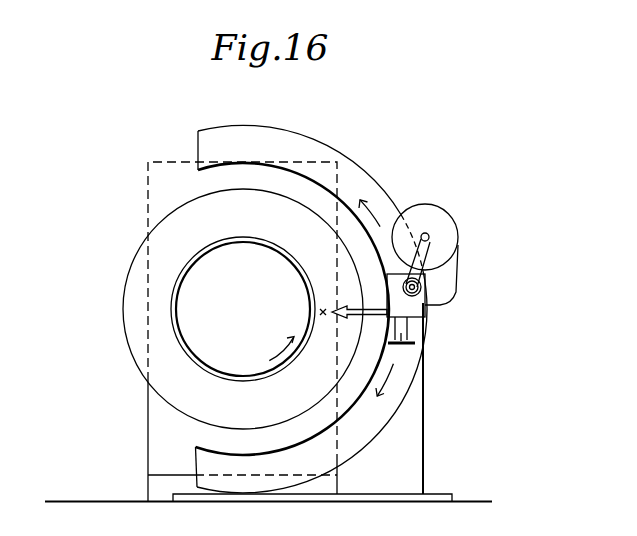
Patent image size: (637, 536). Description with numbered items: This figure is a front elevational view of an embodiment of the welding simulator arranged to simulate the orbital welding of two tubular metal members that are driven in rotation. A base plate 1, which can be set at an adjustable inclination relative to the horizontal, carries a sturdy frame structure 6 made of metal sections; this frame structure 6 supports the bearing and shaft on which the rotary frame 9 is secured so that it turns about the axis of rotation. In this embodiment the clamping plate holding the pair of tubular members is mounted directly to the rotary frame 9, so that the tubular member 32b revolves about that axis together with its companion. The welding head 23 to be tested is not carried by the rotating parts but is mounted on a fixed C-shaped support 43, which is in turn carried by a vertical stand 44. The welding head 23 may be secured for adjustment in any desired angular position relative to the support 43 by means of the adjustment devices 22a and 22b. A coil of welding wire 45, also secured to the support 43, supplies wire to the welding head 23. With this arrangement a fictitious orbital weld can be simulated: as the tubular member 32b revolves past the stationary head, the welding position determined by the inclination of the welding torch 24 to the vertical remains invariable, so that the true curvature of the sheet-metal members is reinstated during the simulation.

The base plate 1 is at (145, 485).
The frame structure 6 is at (158, 185).
The rotary frame 9 is at (141, 357).
The tubular member 32b is at (203, 247).
The welding torch 24 is at (368, 313).
The C-shaped support 43 is at (352, 175).
The coil of welding wire 45 is at (435, 217).
The adjustment device 22a is at (425, 286).
The welding head 23 is at (415, 315).
The adjustment device 22b is at (418, 338).
The vertical stand 44 is at (403, 460).